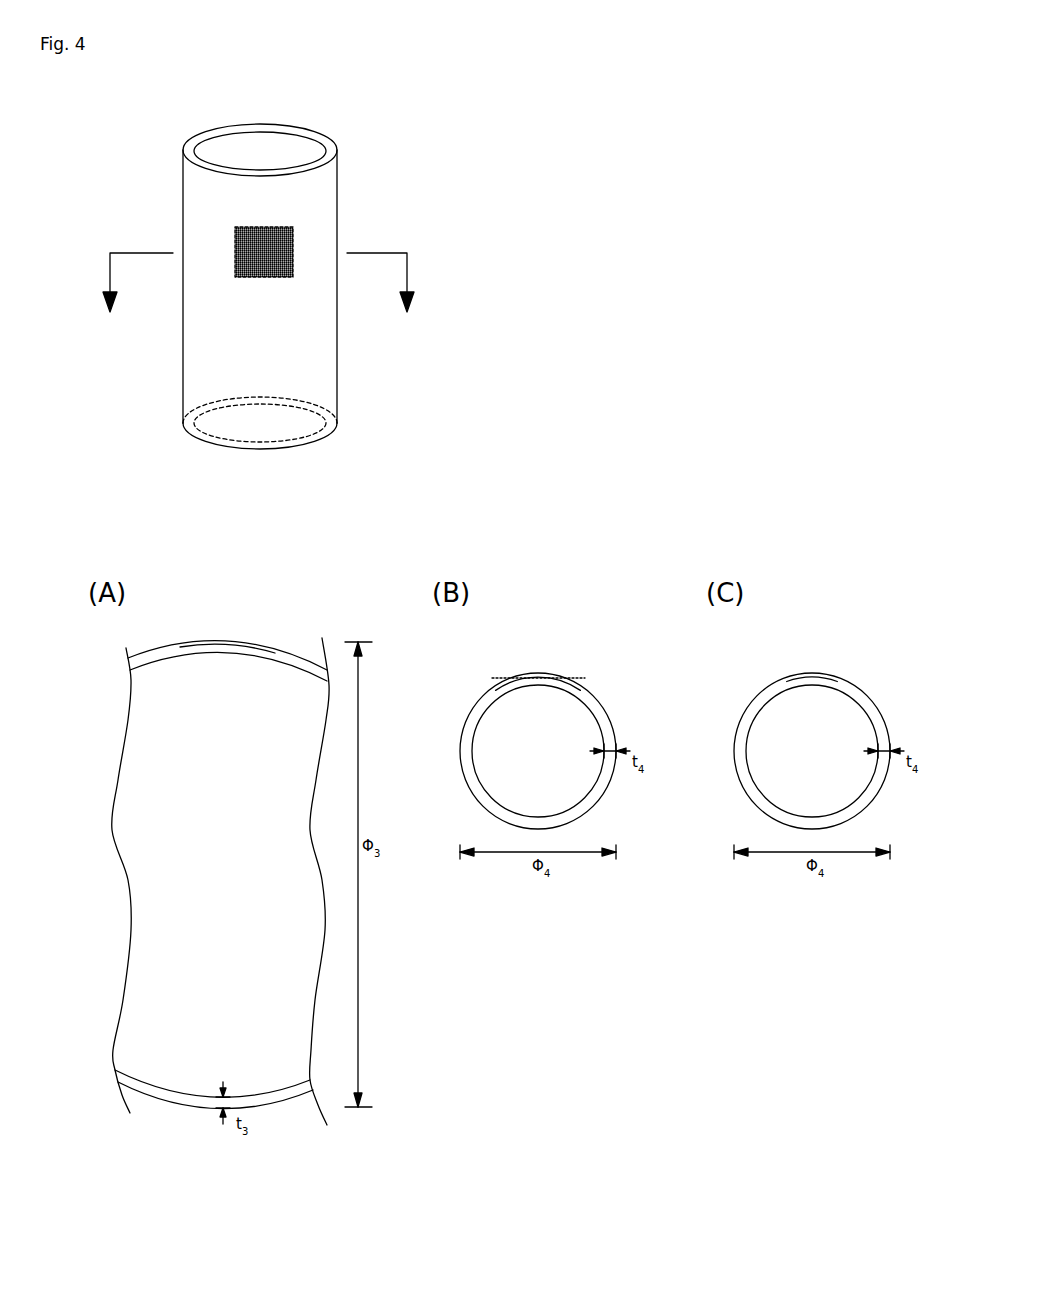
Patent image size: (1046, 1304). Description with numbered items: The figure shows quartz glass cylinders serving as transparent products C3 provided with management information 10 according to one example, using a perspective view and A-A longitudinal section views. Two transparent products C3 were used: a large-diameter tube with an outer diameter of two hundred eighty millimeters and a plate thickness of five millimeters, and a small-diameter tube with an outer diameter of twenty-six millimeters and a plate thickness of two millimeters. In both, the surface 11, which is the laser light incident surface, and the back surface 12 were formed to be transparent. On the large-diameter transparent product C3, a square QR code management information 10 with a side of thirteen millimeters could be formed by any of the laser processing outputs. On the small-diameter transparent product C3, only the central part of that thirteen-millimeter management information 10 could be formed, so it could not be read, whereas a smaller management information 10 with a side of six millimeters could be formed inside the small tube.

The transparent product C3 is at (374, 148).
The management information 10 is at (240, 252).
The surface 11 is at (303, 660).
The back surface 12 is at (289, 664).